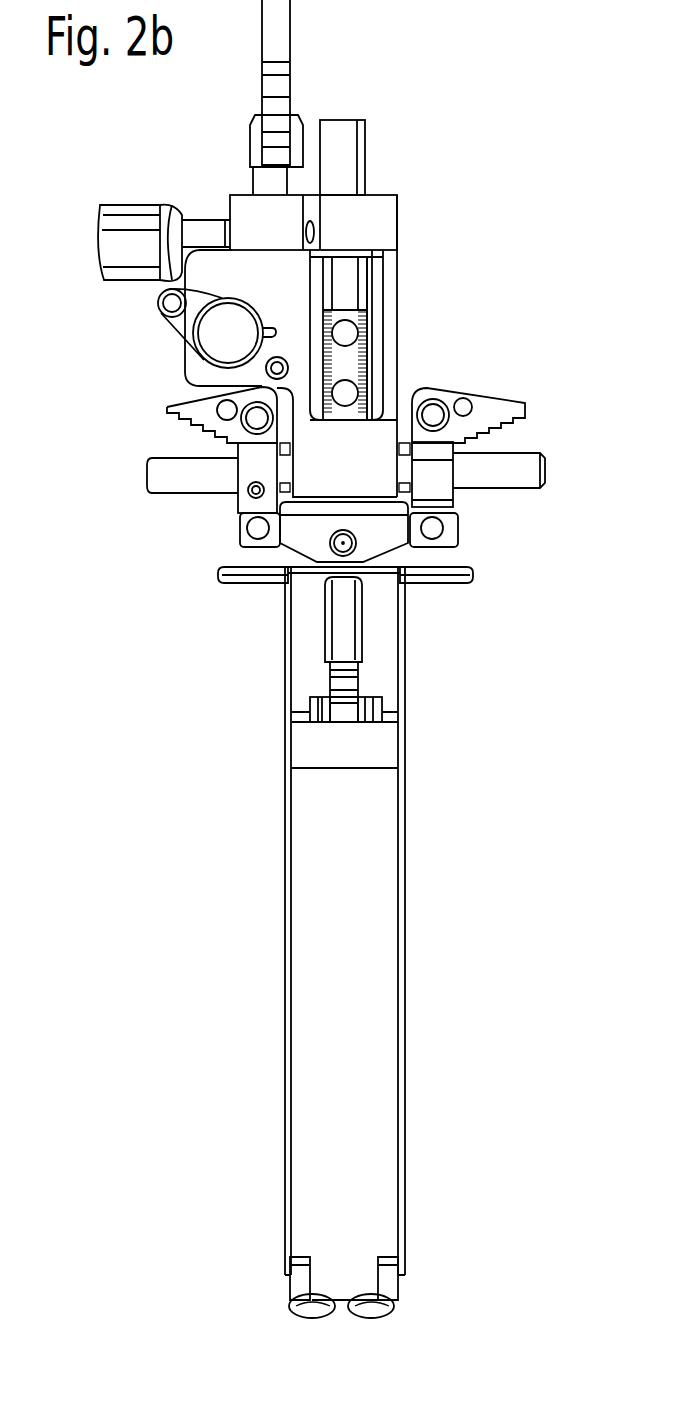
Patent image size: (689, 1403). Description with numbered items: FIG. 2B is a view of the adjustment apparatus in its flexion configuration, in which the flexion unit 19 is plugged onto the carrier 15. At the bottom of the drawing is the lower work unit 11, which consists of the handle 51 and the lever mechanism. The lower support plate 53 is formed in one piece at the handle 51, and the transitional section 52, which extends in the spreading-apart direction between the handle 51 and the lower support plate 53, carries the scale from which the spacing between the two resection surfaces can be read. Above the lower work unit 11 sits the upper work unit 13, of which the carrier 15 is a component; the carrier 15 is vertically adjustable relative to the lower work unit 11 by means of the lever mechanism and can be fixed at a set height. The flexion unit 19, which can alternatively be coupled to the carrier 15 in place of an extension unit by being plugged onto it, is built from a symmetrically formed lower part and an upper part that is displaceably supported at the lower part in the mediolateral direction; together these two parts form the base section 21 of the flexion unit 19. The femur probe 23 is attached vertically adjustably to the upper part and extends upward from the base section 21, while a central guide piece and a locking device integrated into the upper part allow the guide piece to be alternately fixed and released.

The lower work unit 11 is at (446, 913).
The upper work unit 13 is at (534, 359).
The carrier 15 is at (238, 528).
The flexion unit 19 is at (90, 247).
The base section 21 is at (422, 344).
The femur probe 23 is at (323, 106).
The handle 51 is at (317, 1038).
The transitional section 52 is at (380, 650).
The lower support plate 53 is at (470, 573).